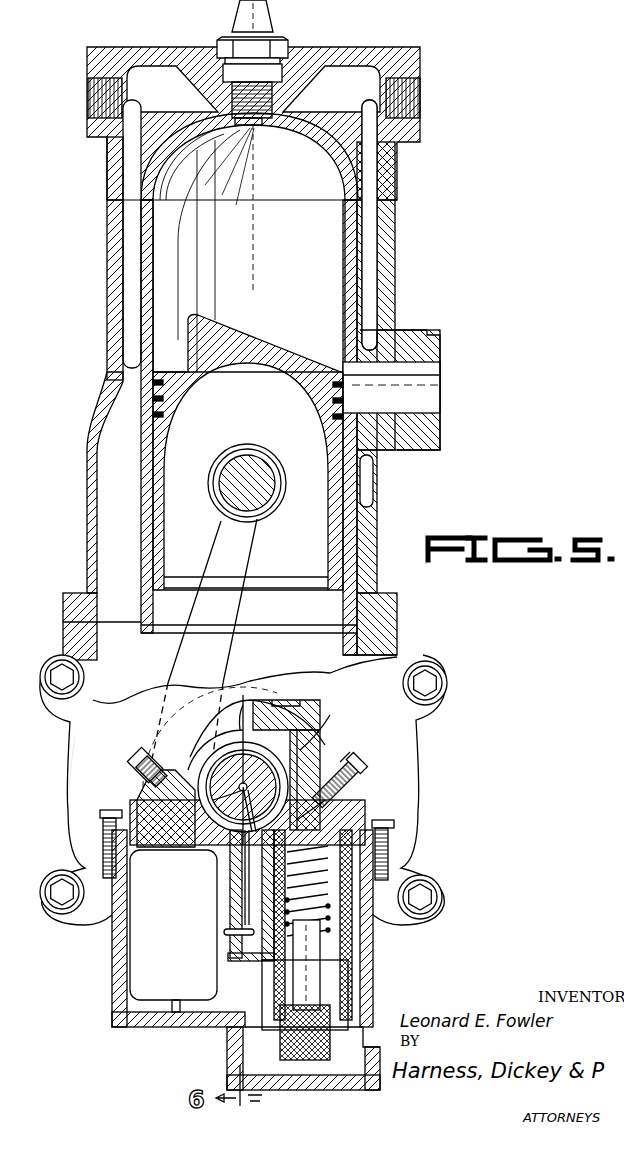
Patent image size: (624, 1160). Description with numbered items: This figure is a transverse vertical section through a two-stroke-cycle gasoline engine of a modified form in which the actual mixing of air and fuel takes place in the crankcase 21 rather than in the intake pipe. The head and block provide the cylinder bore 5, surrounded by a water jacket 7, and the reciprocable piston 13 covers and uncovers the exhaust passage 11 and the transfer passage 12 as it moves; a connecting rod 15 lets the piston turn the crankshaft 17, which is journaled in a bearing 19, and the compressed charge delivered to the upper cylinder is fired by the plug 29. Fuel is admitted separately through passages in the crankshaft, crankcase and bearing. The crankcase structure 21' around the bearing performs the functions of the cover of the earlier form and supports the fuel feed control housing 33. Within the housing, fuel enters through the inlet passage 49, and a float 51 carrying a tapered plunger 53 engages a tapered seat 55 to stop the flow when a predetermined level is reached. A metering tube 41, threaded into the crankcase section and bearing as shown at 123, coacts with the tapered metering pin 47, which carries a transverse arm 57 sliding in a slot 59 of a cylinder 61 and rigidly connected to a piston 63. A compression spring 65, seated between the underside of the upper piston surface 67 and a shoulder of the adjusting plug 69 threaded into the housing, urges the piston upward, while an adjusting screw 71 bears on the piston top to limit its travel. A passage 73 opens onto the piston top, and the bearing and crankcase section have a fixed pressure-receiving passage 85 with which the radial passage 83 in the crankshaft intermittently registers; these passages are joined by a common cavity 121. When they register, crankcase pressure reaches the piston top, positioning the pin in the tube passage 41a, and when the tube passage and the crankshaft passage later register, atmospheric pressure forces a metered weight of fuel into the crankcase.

The cylinder bore 5 is at (337, 262).
The water jacket 7 is at (374, 178).
The exhaust passage 11 is at (440, 368).
The transfer passage 12 is at (100, 498).
The piston 13 is at (263, 333).
The connecting rod 15 is at (240, 553).
The crankshaft 17 is at (234, 766).
The crankshaft bearing 19 is at (235, 711).
The crankcase 21 is at (251, 790).
The crankcase structure 21' is at (339, 732).
The spark plug 29 is at (238, 10).
The housing 33 is at (112, 975).
The metering tube 41 is at (243, 900).
The tube passage 41a is at (228, 793).
The metering pin 47 is at (222, 932).
The fuel inlet passage 49 is at (146, 782).
The float 51 is at (138, 938).
The tapered plunger 53 is at (178, 860).
The tapered seat 55 is at (169, 805).
The transverse arm 57 is at (262, 970).
The slot 59 is at (262, 1004).
The cylinder 61 is at (352, 955).
The piston 63 is at (347, 940).
The compression spring 65 is at (322, 975).
The upper piston surface 67 is at (348, 822).
The adjusting plug 69 is at (324, 995).
The adjusting screw 71 is at (347, 790).
The passage 73 is at (343, 770).
The radial passage 83 is at (258, 804).
The pressure-receiving passage 85 is at (302, 756).
The cavity 121 is at (312, 704).
The threaded connection 123 is at (312, 805).